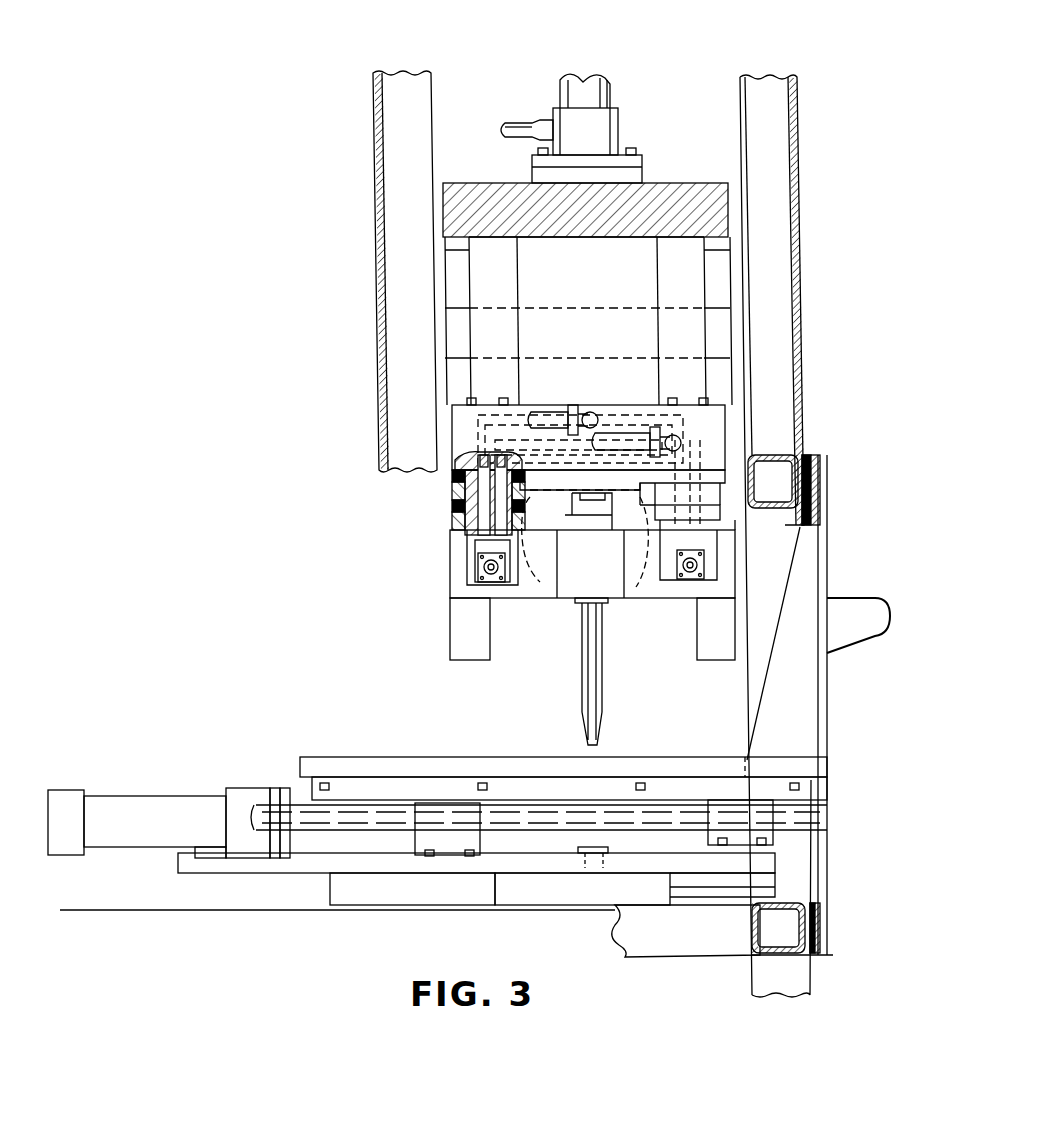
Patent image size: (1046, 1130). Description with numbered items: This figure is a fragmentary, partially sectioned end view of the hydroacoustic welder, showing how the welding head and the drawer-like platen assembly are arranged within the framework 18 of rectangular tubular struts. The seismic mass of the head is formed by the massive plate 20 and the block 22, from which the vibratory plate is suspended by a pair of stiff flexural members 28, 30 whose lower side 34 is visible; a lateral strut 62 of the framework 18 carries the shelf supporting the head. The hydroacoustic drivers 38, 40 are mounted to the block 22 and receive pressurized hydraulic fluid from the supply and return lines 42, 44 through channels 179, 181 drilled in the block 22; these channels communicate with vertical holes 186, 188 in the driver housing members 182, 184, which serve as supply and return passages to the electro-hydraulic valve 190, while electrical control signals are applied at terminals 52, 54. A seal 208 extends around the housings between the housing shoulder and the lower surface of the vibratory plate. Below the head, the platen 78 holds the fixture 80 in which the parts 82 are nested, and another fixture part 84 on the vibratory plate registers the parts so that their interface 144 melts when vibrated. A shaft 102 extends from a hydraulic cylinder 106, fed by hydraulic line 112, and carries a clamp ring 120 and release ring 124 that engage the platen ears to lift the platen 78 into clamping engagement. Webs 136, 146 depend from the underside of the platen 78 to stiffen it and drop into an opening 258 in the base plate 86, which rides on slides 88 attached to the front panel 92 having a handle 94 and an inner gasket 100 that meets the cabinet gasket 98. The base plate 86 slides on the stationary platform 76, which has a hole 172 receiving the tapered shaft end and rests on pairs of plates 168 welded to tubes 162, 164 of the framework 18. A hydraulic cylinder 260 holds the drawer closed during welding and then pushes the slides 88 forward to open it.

The framework 18 is at (390, 116).
The massive plate 20 is at (660, 185).
The block 22 is at (640, 290).
The flexural member 28 is at (720, 284).
The flexural member 30 is at (456, 274).
The lower side 34 is at (720, 238).
The hydroacoustic driver 38 is at (695, 570).
The hydroacoustic driver 40 is at (488, 548).
The hydraulic supply line 42 is at (548, 414).
The hydraulic return line 44 is at (623, 433).
The terminal 52 is at (706, 565).
The terminal 54 is at (490, 580).
The lateral strut 62 is at (736, 345).
The stationary platform 76 is at (294, 876).
The platen 78 is at (537, 593).
The fixture 80 is at (526, 580).
The parts 82 is at (665, 544).
The fixture part 84 is at (545, 505).
The base plate 86 is at (344, 765).
The slide 88 is at (826, 816).
The front panel 92 is at (826, 536).
The handle 94 is at (862, 612).
The gasket 98 is at (794, 449).
The gasket 100 is at (804, 487).
The shaft 102 is at (604, 668).
The hydraulic cylinder 106 is at (600, 100).
The hydraulic line 112 is at (515, 138).
The clamp ring 120 is at (586, 605).
The release ring 124 is at (586, 530).
The web 136 is at (724, 656).
The interface 144 is at (634, 522).
The web 146 is at (472, 660).
The rectangular tube 162 is at (638, 921).
The tube 164 is at (752, 928).
The pair of plates 168 is at (432, 896).
The hole 172 is at (606, 847).
The channel 179 is at (518, 408).
The channel 181 is at (693, 440).
The housing member 182 is at (480, 518).
The housing member 184 is at (720, 512).
The vertical hole 186 is at (695, 460).
The vertical hole 188 is at (712, 462).
The electro-hydraulic valve 190 is at (478, 564).
The seal 208 is at (452, 480).
The opening 258 is at (740, 765).
The hydraulic cylinder 260 is at (162, 794).